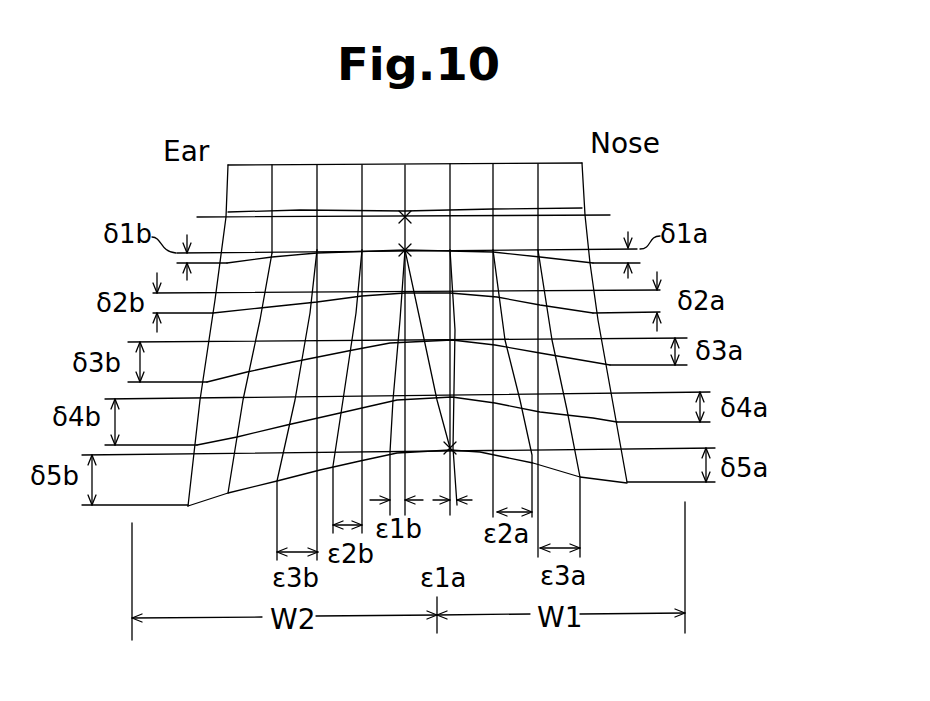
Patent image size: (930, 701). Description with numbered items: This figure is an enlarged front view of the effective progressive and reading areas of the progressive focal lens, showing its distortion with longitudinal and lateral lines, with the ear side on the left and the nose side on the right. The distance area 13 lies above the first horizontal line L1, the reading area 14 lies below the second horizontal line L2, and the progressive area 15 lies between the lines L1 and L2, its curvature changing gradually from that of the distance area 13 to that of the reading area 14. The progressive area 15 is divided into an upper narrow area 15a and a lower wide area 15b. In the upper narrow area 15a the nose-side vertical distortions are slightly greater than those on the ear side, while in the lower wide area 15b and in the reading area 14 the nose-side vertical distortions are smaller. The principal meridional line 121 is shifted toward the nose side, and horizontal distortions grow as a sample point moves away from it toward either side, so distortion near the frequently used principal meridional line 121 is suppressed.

The distance area 13 is at (788, 115).
The progressive area 15 is at (788, 247).
The reading area 14 is at (788, 448).
The upper narrow area 15a is at (428, 283).
The lower wide area 15b is at (428, 435).
The principal meridional line 121 is at (447, 412).
The first horizontal line L1 is at (605, 216).
The second horizontal line L2 is at (598, 452).